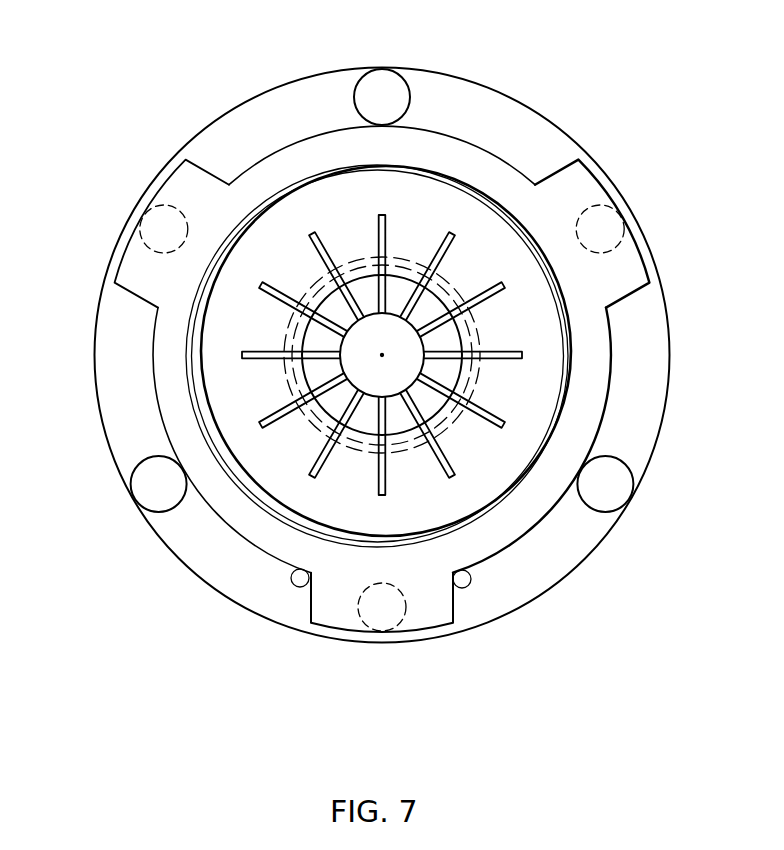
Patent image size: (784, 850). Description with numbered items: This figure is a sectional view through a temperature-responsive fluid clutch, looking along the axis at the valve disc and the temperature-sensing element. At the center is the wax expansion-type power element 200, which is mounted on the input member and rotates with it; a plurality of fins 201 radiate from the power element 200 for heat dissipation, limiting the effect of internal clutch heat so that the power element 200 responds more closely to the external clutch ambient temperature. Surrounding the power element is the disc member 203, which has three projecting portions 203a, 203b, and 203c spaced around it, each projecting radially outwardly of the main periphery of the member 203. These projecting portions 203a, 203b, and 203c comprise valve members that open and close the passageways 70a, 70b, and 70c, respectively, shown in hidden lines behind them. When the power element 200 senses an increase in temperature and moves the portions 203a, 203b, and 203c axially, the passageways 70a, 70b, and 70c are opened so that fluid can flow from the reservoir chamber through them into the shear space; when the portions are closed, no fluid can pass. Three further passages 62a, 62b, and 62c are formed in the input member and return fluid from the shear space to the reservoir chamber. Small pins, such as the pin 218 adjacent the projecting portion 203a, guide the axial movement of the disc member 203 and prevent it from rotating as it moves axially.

The passage 62a is at (612, 490).
The passage 62b is at (381, 72).
The passage 62c is at (150, 490).
The passageway 70a is at (366, 620).
The passageway 70b is at (617, 208).
The passageway 70c is at (156, 196).
The power element 200 is at (331, 338).
The fins 201 is at (448, 228).
The disc member 203 is at (588, 384).
The projecting portion 203a is at (417, 618).
The projecting portion 203b is at (622, 246).
The projecting portion 203c is at (147, 256).
The pin 218 is at (292, 586).